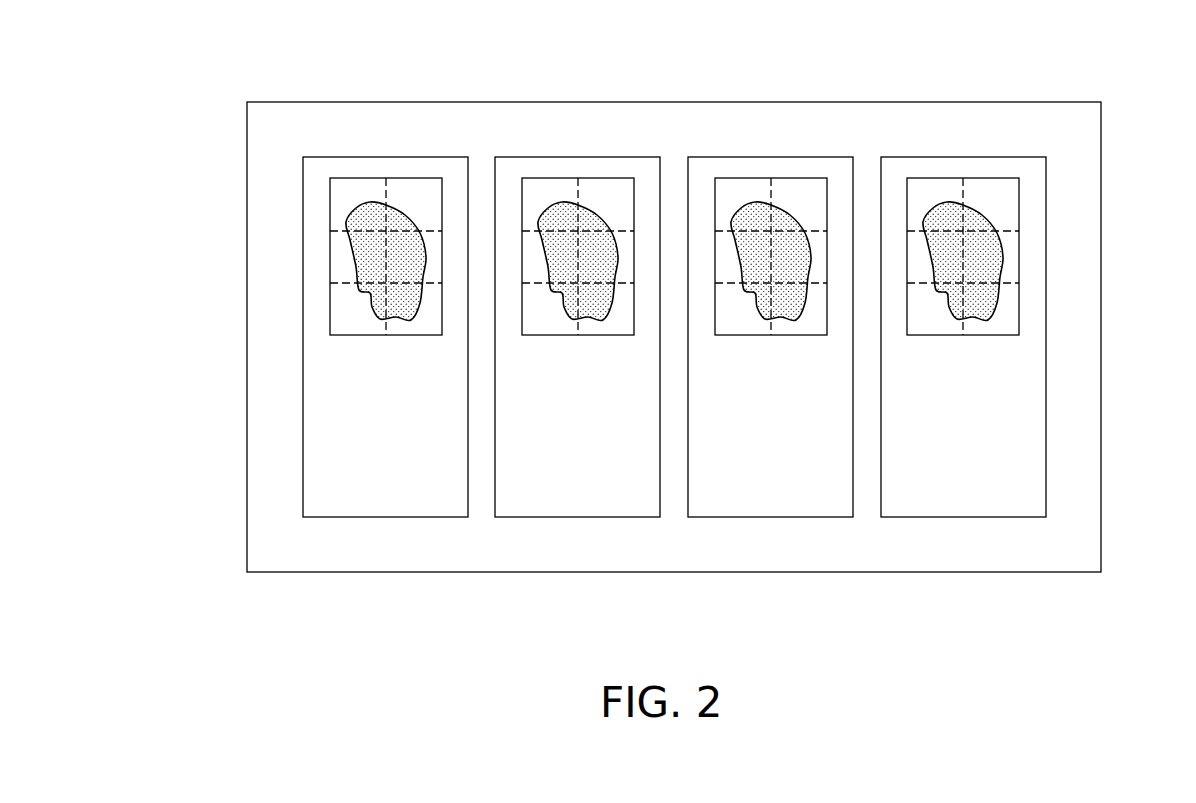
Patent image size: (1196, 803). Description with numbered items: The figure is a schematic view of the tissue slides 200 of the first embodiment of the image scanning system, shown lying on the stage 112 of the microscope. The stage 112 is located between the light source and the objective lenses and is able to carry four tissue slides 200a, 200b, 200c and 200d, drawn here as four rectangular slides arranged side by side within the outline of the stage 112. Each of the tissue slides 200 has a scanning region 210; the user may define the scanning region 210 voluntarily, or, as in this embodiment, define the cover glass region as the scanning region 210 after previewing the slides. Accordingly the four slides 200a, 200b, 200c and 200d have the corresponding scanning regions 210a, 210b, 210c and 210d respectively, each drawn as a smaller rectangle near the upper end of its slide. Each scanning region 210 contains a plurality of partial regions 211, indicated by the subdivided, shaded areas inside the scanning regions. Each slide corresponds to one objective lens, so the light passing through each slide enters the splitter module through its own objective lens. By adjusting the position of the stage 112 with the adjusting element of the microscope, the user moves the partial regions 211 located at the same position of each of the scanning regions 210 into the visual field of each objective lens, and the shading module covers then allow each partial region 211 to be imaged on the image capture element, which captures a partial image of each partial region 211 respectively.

The stage 112 is at (1083, 470).
The tissue slides 200 is at (1031, 395).
The tissue slide 200a is at (351, 494).
The tissue slide 200b is at (545, 494).
The tissue slide 200c is at (738, 494).
The tissue slide 200d is at (930, 494).
The scanning region 210 is at (1040, 190).
The scanning region 210a is at (353, 178).
The scanning region 210b is at (546, 178).
The scanning region 210c is at (739, 178).
The scanning region 210d is at (930, 178).
The partial regions 211 is at (347, 314).